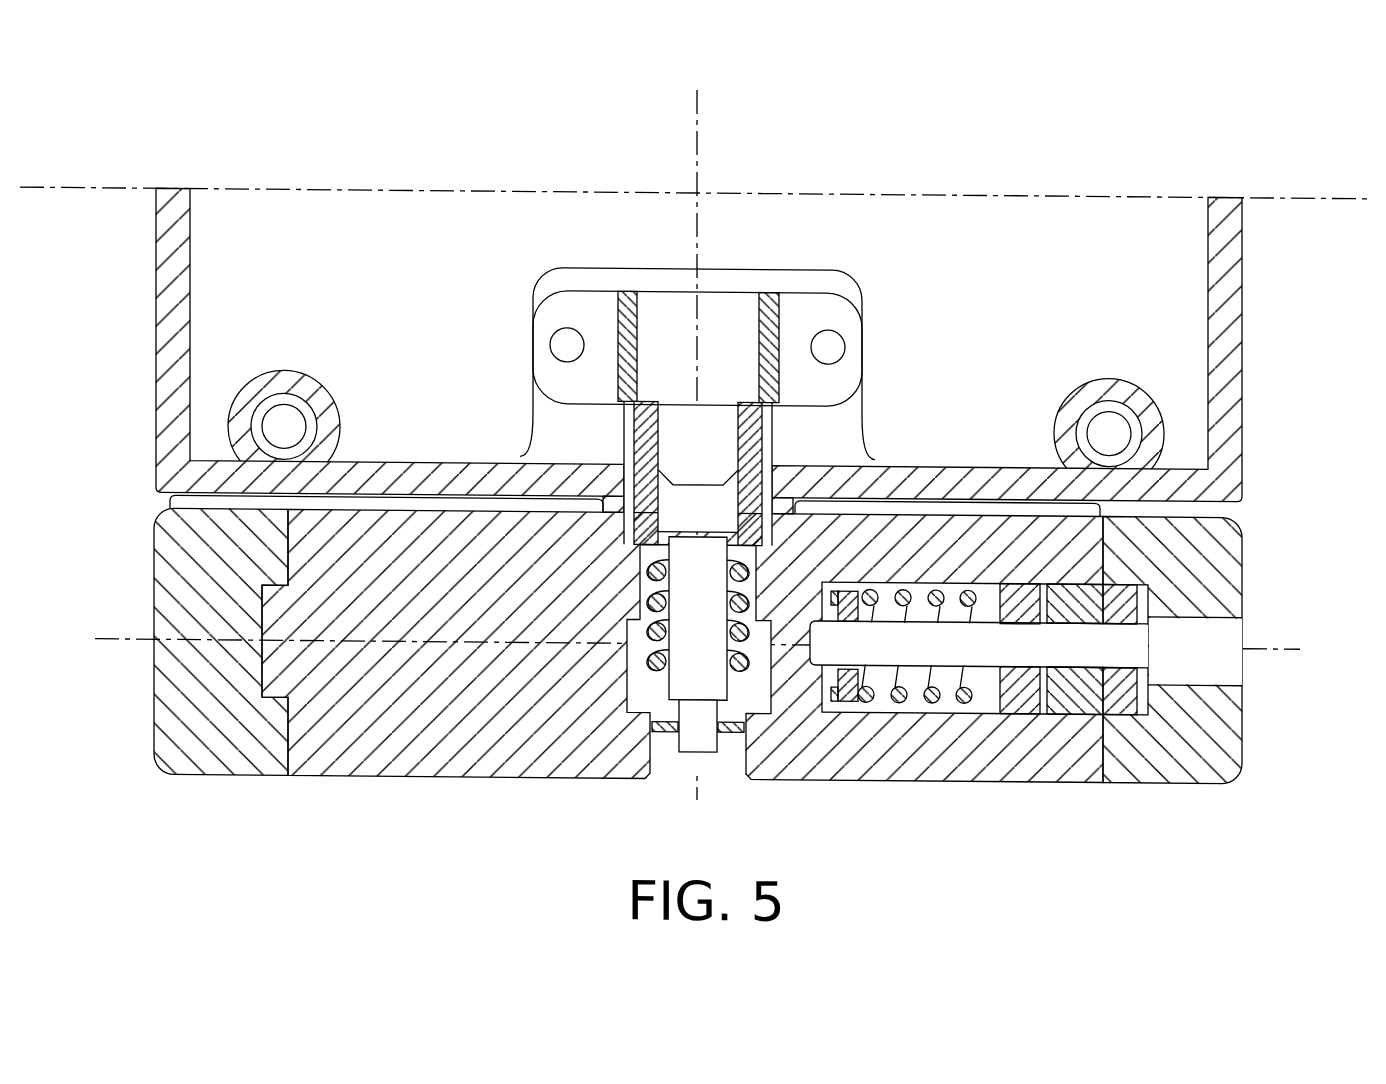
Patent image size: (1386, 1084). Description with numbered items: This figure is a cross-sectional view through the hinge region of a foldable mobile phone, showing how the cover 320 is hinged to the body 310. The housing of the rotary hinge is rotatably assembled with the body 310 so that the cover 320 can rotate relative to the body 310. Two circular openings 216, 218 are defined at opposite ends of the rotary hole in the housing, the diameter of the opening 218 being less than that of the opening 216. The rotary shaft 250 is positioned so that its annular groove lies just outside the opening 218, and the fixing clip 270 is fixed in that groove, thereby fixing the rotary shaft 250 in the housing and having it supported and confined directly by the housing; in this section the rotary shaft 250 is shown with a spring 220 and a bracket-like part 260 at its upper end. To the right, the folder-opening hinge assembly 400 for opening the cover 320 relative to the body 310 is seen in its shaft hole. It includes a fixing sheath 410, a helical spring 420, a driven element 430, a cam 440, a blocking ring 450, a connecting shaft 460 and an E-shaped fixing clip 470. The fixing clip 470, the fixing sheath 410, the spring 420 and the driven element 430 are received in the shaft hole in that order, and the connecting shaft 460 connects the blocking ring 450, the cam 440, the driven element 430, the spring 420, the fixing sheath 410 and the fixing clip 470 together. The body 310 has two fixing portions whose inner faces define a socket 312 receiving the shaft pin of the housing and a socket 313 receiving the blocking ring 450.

The circular opening 216 is at (748, 697).
The circular opening 218 is at (665, 732).
The nozzle spring 220 is at (622, 698).
The rotary shaft 250 is at (733, 320).
The bracket 260 is at (843, 332).
The fixing clip 270 is at (714, 733).
The body 310 is at (1222, 571).
The socket 312 is at (263, 694).
The socket 313 is at (1150, 595).
The cover 320 is at (1225, 288).
The folder-opening hinge assembly 400 is at (1122, 663).
The fixing sheath 410 is at (868, 598).
The helical spring 420 is at (913, 693).
The driven element 430 is at (1035, 618).
The cam 440 is at (1068, 625).
The blocking ring 450 is at (1177, 733).
The connecting shaft 460 is at (1100, 655).
The E-shaped fixing clip 470 is at (840, 694).